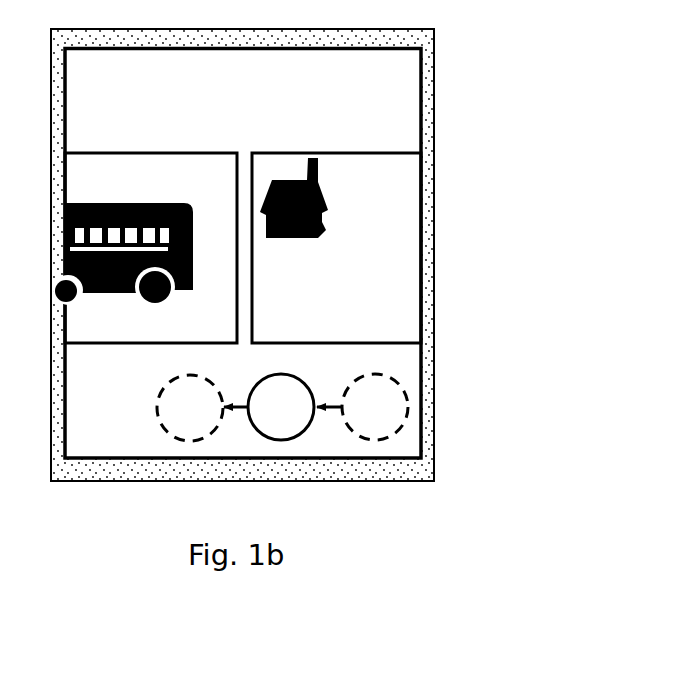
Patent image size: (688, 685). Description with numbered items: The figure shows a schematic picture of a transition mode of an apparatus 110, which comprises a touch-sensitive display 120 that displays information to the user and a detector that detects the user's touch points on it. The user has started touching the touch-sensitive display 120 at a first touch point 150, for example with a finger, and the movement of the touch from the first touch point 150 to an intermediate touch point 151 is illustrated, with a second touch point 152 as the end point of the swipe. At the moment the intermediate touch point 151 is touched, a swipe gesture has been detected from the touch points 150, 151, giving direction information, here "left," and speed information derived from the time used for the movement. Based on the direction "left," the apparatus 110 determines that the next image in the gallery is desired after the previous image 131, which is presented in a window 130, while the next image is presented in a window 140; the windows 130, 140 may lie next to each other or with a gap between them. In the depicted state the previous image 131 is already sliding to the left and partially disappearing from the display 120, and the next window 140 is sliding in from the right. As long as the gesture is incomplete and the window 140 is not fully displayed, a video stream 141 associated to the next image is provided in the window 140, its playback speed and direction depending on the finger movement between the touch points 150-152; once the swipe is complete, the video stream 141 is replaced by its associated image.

The apparatus 110 is at (425, 39).
The touch-sensitive display 120 is at (410, 116).
The window 130 is at (115, 153).
The image 131 is at (135, 237).
The window 140 is at (316, 153).
The video stream 141 is at (336, 198).
The first touch point 150 is at (386, 376).
The intermediate touch point 151 is at (276, 377).
The second touch point 152 is at (188, 377).